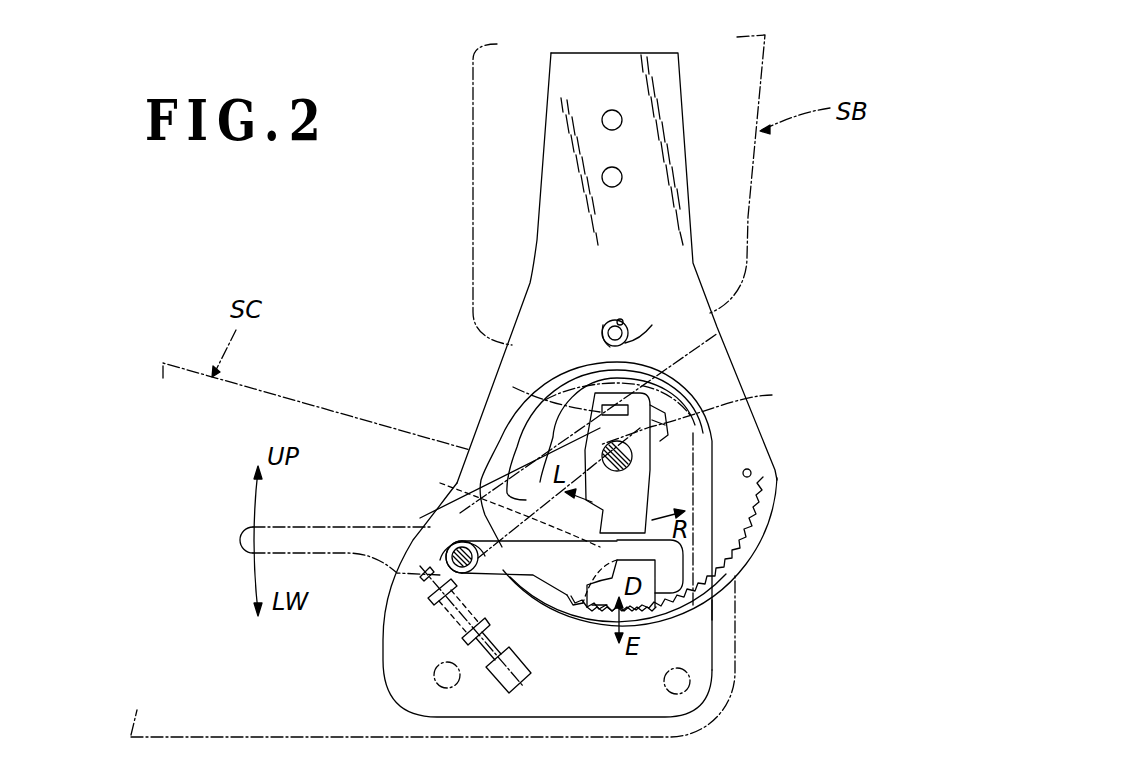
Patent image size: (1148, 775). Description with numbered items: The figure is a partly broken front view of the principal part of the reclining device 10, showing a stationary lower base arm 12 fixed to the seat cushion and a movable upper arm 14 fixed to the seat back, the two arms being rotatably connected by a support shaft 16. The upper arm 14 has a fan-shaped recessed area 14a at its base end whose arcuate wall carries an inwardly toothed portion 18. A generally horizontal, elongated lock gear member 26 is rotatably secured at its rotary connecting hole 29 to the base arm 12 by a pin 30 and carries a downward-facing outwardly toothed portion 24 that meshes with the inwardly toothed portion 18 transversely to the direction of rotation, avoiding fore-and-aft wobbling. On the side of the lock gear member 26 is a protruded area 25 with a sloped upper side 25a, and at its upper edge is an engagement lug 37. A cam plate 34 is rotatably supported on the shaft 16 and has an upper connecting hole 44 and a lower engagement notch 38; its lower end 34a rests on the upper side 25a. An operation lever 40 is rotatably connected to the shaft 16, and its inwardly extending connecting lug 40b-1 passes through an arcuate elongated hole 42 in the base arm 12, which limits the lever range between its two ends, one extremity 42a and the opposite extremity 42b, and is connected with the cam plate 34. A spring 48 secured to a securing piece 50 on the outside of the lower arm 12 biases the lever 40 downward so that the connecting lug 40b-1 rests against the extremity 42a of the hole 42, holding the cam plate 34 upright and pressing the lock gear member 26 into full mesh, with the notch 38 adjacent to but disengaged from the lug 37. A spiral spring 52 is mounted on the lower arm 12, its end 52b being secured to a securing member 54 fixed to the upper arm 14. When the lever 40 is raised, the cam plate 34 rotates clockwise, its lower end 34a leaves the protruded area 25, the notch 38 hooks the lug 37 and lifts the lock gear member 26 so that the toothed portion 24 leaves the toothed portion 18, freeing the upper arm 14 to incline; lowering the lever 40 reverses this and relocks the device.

The reclining device 10 is at (443, 123).
The lower base arm 12 is at (713, 645).
The upper arm 14 is at (700, 267).
The fan-shaped recessed area 14a is at (751, 470).
The support shaft 16 is at (632, 462).
The inwardly toothed portion 18 is at (650, 608).
The outwardly toothed portion 24 is at (600, 612).
The protruded area 25 is at (583, 610).
The upper side of protruded area 25a is at (617, 560).
The lock gear member 26 is at (708, 607).
The rotary connecting hole 29 is at (472, 572).
The pin 30 is at (433, 526).
The cam plate 34 is at (576, 434).
The lower end of cam plate 34a is at (725, 563).
The engagement lug 37 is at (491, 497).
The engagement notch 38 is at (634, 512).
The operation lever 40 is at (312, 522).
The connecting lug 40b-1 is at (718, 333).
The arcuate elongated hole 42 is at (660, 414).
The extremity of arcuate elongated hole 42a is at (513, 387).
The lock member arm 42b is at (710, 413).
The upper connecting hole 44 is at (608, 408).
The spring 48 is at (423, 574).
The securing piece 50 is at (519, 656).
The spiral spring 52 is at (633, 347).
The end of spiral spring 52b is at (603, 324).
The securing member 54 is at (620, 320).